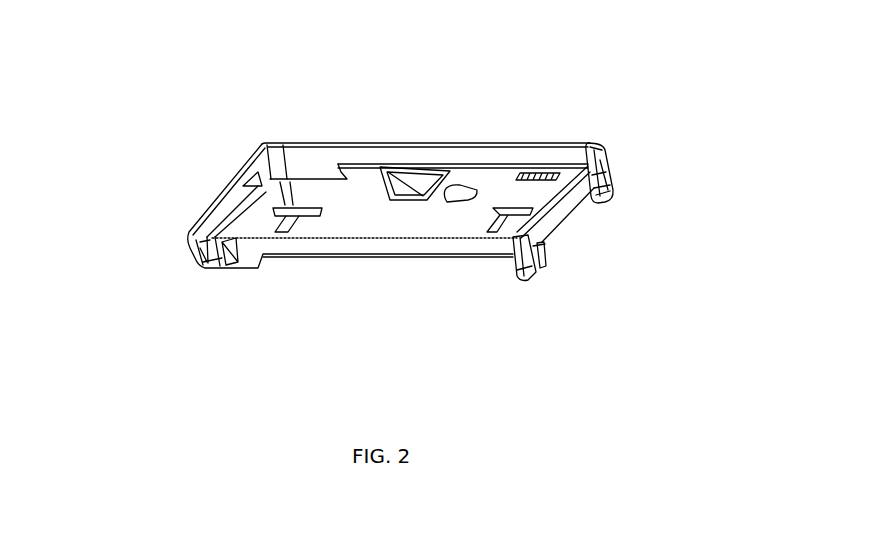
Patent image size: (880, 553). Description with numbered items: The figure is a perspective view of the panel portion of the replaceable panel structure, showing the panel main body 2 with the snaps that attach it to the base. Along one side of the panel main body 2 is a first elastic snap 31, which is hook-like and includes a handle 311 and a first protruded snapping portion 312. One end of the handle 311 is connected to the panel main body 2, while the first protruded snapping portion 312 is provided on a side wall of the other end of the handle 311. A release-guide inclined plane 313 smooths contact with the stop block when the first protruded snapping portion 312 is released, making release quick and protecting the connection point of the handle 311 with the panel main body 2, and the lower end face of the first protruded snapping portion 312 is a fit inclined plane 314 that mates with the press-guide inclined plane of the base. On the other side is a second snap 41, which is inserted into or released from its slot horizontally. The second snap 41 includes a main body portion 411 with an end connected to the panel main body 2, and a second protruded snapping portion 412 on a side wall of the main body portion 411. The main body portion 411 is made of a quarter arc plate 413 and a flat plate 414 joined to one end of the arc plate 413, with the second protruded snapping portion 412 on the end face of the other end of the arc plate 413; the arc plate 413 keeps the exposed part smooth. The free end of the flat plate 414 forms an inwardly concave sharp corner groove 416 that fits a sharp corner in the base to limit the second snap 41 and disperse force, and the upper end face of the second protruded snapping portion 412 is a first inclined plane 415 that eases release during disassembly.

The panel main body 2 is at (418, 143).
The first elastic snap 31 is at (221, 199).
The handle 311 is at (210, 237).
The first protruded snapping portion 312 is at (232, 236).
The release-guide inclined plane 313 is at (290, 218).
The fit inclined plane 314 is at (288, 206).
The second snap 41 is at (598, 215).
The main body portion 411 is at (607, 172).
The second protruded snapping portion 412 is at (603, 200).
The arc plate 413 is at (526, 280).
The flat plate 414 is at (541, 278).
The first inclined plane 415 is at (588, 155).
The sharp corner groove 416 is at (535, 240).